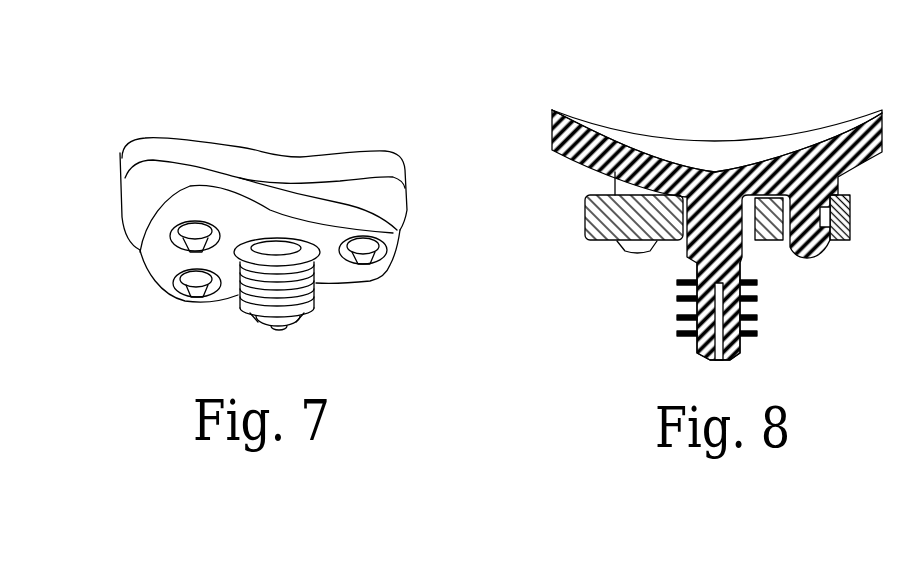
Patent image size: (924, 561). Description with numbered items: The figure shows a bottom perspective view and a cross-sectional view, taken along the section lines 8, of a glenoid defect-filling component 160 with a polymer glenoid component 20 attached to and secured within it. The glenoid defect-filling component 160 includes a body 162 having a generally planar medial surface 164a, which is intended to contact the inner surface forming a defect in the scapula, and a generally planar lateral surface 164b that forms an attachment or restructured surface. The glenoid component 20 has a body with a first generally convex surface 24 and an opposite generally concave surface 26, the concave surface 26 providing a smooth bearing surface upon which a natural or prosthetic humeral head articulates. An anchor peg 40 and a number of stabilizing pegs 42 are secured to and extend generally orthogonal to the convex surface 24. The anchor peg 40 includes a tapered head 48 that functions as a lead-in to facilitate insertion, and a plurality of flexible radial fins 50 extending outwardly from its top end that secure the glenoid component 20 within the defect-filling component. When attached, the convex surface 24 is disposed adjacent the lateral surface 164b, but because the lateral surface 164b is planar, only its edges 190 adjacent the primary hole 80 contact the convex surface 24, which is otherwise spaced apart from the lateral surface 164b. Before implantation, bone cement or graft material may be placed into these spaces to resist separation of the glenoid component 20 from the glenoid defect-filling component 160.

In FIG. 7, the section lines 8- 8 is at (460, 203).
In FIG. 7, the glenoid component 20 is at (344, 118).
In FIG. 7, the convex surface 24 is at (137, 192).
In FIG. 8, the convex surface 24 is at (562, 163).
In FIG. 7, the concave surface 26 is at (173, 138).
In FIG. 8, the concave surface 26 is at (636, 150).
In FIG. 7, the anchor peg 40 is at (298, 250).
In FIG. 8, the anchor peg 40 is at (746, 255).
In FIG. 7, the stabilizing pegs 42 is at (183, 247).
In FIG. 8, the stabilizing pegs 42 is at (633, 252).
In FIG. 7, the tapered head 48 is at (270, 326).
In FIG. 8, the tapered head 48 is at (737, 352).
In FIG. 7, the flexible radial fins 50 is at (242, 270).
In FIG. 8, the flexible radial fins 50 is at (758, 283).
In FIG. 7, the primary hole 80 is at (222, 275).
In FIG. 8, the primary hole 80 is at (677, 240).
In FIG. 7, the glenoid defect-filling component 160 is at (428, 229).
In FIG. 7, the body 162 is at (306, 172).
In FIG. 8, the body 162 is at (852, 196).
In FIG. 7, the medial surface 164a is at (351, 272).
In FIG. 8, the medial surface 164a is at (592, 241).
In FIG. 7, the lateral surface 164b is at (207, 178).
In FIG. 8, the lateral surface 164b is at (590, 192).
In FIG. 8, the edges 190 is at (681, 160).